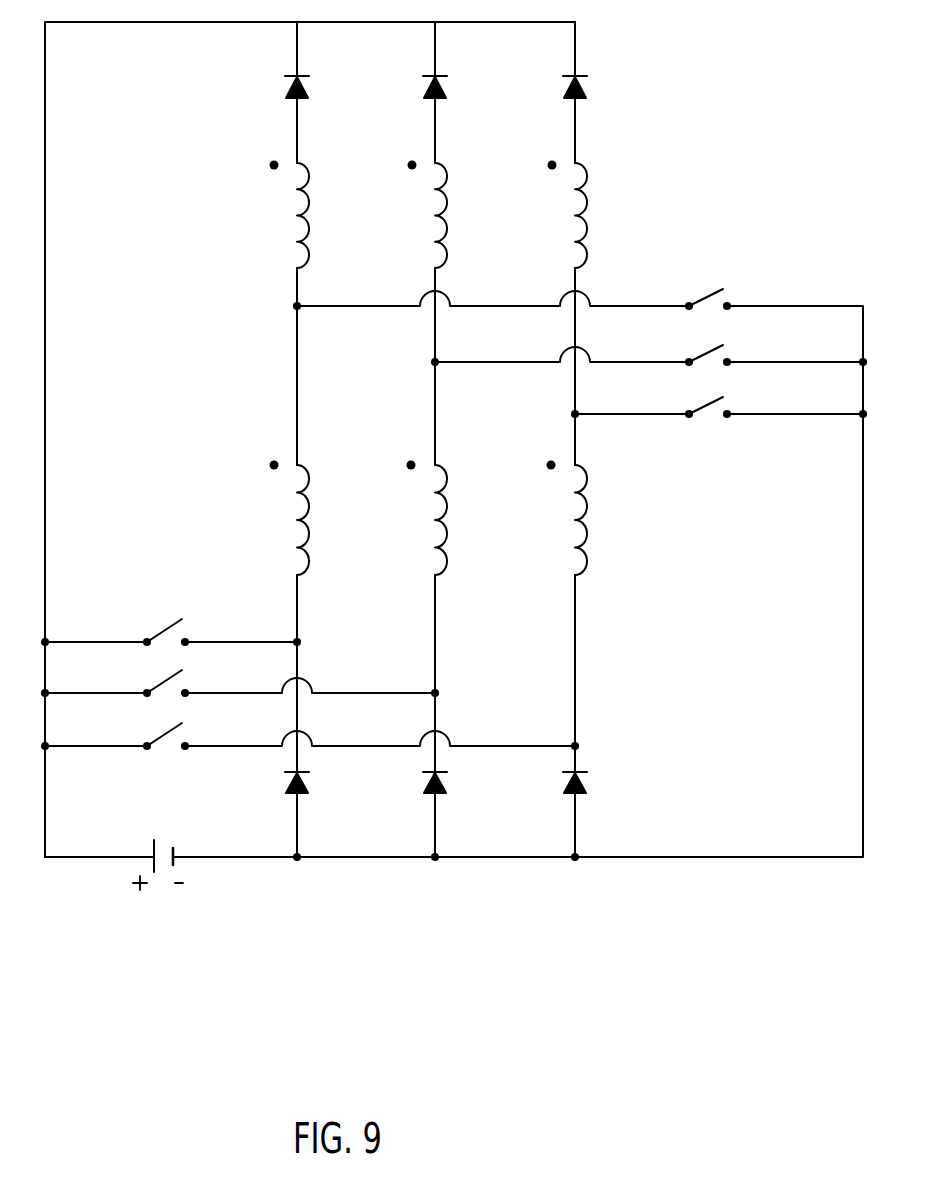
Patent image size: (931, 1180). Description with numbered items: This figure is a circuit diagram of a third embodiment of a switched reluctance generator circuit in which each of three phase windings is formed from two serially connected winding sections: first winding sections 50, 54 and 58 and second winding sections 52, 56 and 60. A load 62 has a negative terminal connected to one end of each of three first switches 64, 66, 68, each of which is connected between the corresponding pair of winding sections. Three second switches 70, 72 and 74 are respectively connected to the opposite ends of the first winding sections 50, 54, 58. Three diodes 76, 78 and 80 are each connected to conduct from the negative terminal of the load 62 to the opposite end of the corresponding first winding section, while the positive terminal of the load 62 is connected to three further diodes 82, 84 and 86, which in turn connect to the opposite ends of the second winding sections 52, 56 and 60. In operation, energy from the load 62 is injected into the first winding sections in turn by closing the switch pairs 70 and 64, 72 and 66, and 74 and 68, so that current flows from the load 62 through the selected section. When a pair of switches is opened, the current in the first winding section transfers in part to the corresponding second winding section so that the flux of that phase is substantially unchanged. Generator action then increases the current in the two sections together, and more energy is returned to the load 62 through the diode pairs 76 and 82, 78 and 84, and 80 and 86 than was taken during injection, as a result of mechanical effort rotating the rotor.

The first winding section 50 is at (297, 520).
The second winding section 52 is at (297, 219).
The first winding section 54 is at (435, 520).
The second winding section 56 is at (435, 219).
The first winding section 58 is at (575, 520).
The second winding section 60 is at (575, 219).
The load 62 is at (163, 873).
The first switch 64 is at (712, 296).
The first switch 66 is at (712, 352).
The first switch 68 is at (712, 404).
The second switch 70 is at (165, 630).
The second switch 72 is at (165, 681).
The second switch 74 is at (165, 734).
The diode 76 is at (309, 790).
The diode 78 is at (447, 790).
The diode 80 is at (587, 790).
The further diode 82 is at (309, 95).
The further diode 84 is at (447, 95).
The further diode 86 is at (587, 95).